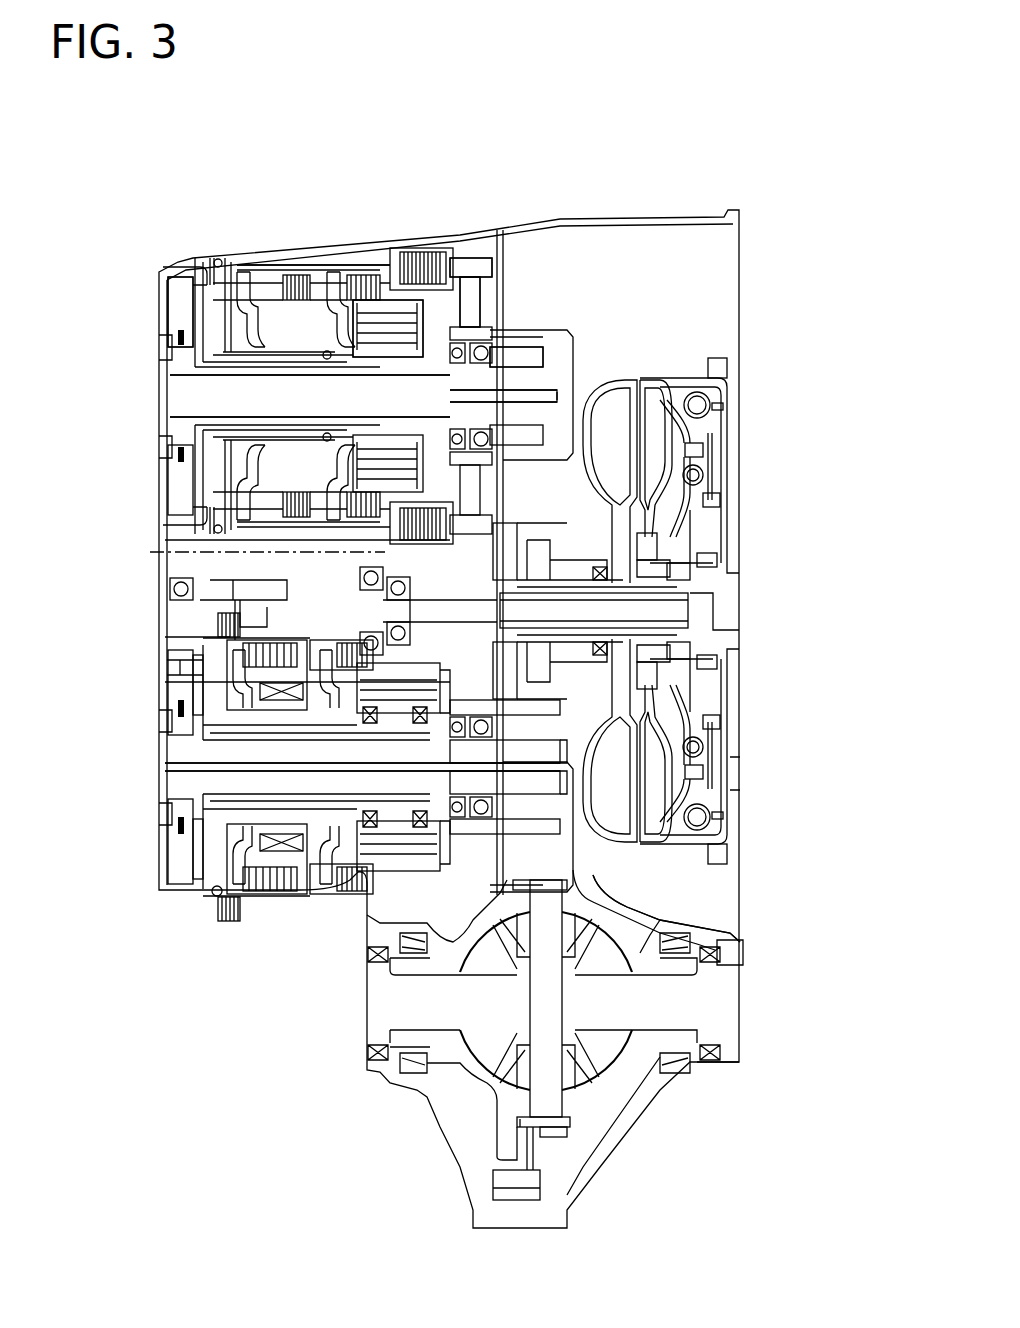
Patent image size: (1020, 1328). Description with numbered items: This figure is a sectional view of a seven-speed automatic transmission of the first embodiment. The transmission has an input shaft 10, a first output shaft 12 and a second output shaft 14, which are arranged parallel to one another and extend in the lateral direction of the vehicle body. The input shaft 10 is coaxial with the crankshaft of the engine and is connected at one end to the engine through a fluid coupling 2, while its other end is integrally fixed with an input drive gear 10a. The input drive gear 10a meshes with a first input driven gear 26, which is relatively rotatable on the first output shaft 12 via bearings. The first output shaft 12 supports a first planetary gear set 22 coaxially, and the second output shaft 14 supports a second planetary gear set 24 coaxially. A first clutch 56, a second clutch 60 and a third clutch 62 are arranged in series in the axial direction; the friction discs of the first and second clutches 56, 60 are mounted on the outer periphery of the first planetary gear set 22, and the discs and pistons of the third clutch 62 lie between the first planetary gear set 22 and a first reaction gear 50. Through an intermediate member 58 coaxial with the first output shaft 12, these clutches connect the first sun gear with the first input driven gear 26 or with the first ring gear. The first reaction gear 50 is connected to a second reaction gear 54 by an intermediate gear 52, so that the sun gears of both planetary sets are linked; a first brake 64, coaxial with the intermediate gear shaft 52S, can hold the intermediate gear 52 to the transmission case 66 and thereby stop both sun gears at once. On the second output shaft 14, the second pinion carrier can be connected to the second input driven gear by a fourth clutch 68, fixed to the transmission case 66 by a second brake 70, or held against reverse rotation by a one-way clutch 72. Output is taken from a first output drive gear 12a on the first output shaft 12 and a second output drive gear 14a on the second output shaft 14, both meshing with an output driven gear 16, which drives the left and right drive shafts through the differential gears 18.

The fluid coupling 2 is at (643, 400).
The input shaft 10 is at (668, 607).
The input drive gear 10a is at (462, 567).
The first output shaft 12 is at (527, 380).
The first output drive gear 12a is at (508, 353).
The second output shaft 14 is at (620, 874).
The second output drive gear 14a is at (600, 918).
The output driven gear 16 is at (533, 1181).
The differential gears 18 is at (597, 1062).
The first planetary gear set 22 is at (390, 250).
The second planetary gear set 24 is at (380, 900).
The first input driven gear 26 is at (478, 275).
The first reaction gear 50 is at (160, 280).
The intermediate gear 52 is at (200, 627).
The intermediate gear shaft 52S is at (182, 570).
The second reaction gear 54 is at (180, 668).
The first clutch 56 is at (420, 255).
The intermediate member 58 is at (250, 275).
The second clutch 60 is at (357, 275).
The third clutch 62 is at (297, 273).
The first brake 64 is at (212, 650).
The transmission case 66 is at (162, 448).
The fourth clutch 68 is at (343, 893).
The second brake 70 is at (270, 891).
The one-way clutch 72 is at (240, 842).